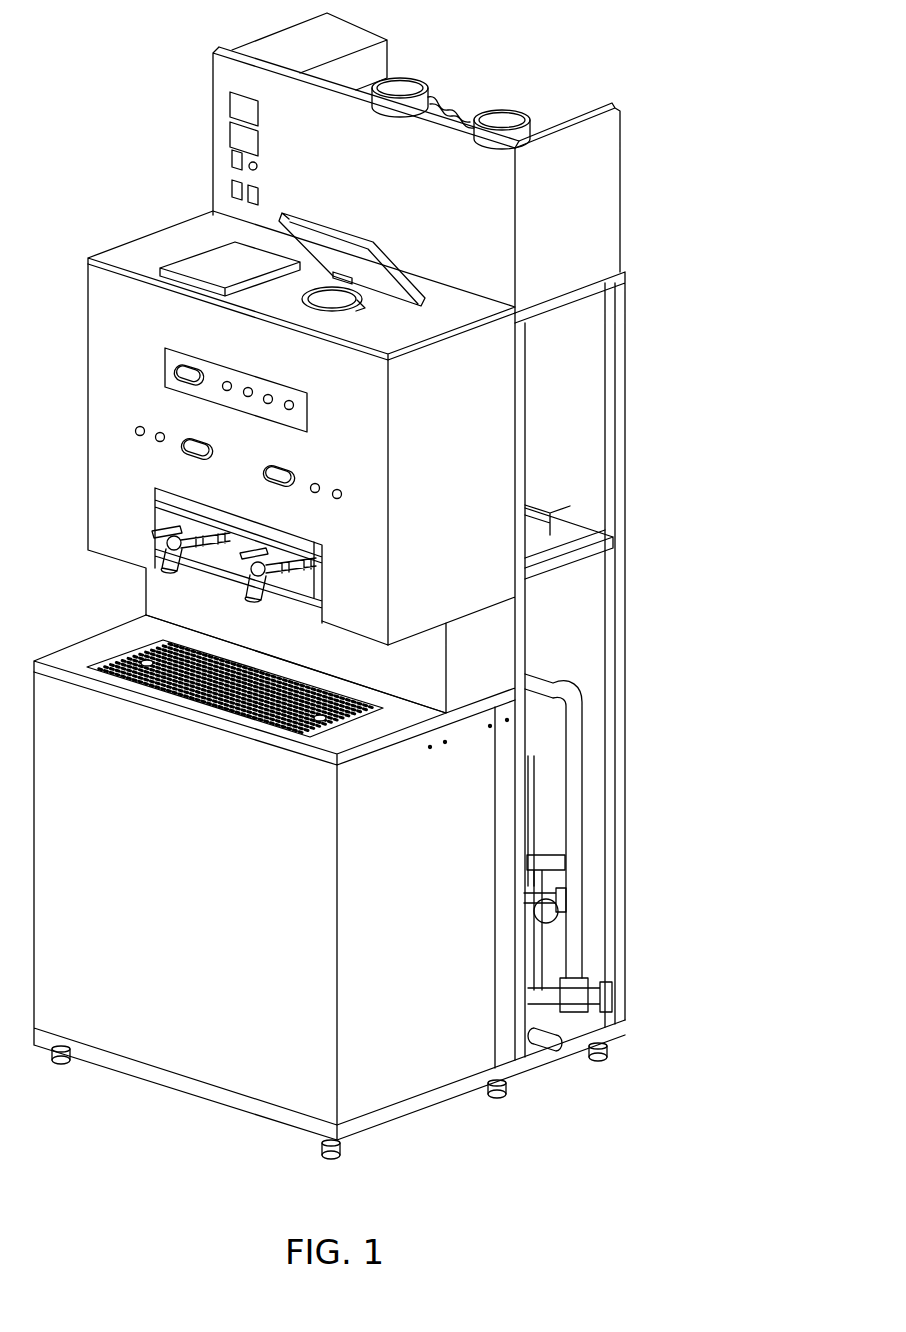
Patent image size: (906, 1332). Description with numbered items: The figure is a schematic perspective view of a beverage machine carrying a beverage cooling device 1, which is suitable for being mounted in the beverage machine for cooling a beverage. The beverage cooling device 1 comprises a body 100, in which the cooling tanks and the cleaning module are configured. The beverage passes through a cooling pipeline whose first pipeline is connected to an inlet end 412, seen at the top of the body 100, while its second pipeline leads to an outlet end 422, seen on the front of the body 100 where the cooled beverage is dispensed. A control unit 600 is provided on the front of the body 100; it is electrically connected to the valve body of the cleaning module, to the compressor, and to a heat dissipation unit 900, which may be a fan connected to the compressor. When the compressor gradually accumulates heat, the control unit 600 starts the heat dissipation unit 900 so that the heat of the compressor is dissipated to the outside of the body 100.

The beverage cooling device 1 is at (49, 26).
The body 100 is at (450, 456).
The inlet end 412 is at (368, 289).
The outlet end 422 is at (163, 576).
The control unit 600 is at (183, 362).
The heat dissipation unit 900 is at (500, 116).